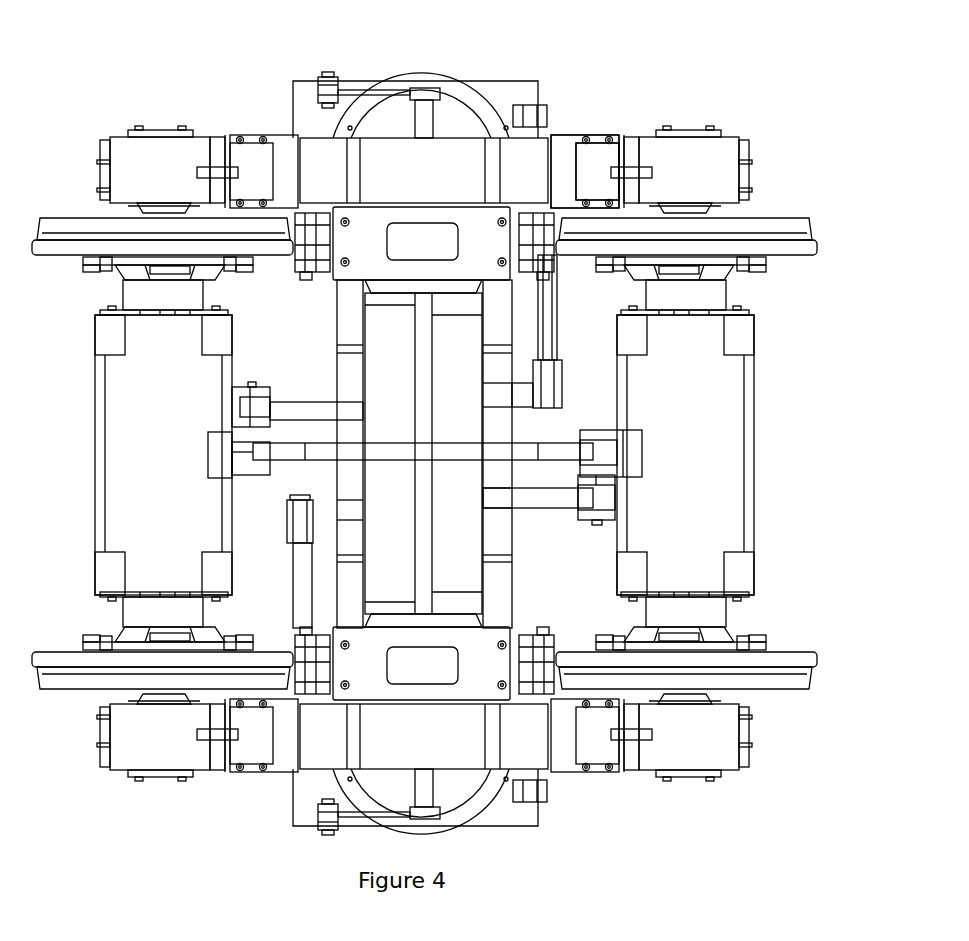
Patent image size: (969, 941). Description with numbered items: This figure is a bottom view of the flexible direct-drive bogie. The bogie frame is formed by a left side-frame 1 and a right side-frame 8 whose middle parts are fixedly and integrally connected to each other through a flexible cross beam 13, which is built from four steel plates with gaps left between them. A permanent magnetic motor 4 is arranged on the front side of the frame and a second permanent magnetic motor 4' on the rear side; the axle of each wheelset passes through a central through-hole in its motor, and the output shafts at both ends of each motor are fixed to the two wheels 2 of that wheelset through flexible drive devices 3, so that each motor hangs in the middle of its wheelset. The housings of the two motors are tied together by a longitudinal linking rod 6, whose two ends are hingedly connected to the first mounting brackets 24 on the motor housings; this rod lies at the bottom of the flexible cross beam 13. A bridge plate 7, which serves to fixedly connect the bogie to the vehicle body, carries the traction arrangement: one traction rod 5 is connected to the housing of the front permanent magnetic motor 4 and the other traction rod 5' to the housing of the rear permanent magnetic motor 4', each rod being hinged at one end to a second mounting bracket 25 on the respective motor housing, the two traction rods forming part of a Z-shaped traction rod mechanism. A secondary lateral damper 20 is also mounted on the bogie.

The left side-frame 1 is at (587, 733).
The wheel 2 is at (745, 225).
The flexible drive devices 3 is at (752, 283).
The permanent magnetic motor 4 is at (726, 455).
The permanent magnetic motor 4' is at (130, 455).
The traction rod 5 is at (538, 539).
The traction rod 5' is at (297, 370).
The longitudinal linking rod 6 is at (322, 463).
The bridge plate 7 is at (442, 123).
The right side-frame 8 is at (580, 160).
The flexible cross beam 13 is at (390, 382).
The secondary lateral damper 20 is at (543, 325).
The first mounting bracket 24 is at (613, 437).
The second mounting bracket 25 is at (603, 513).